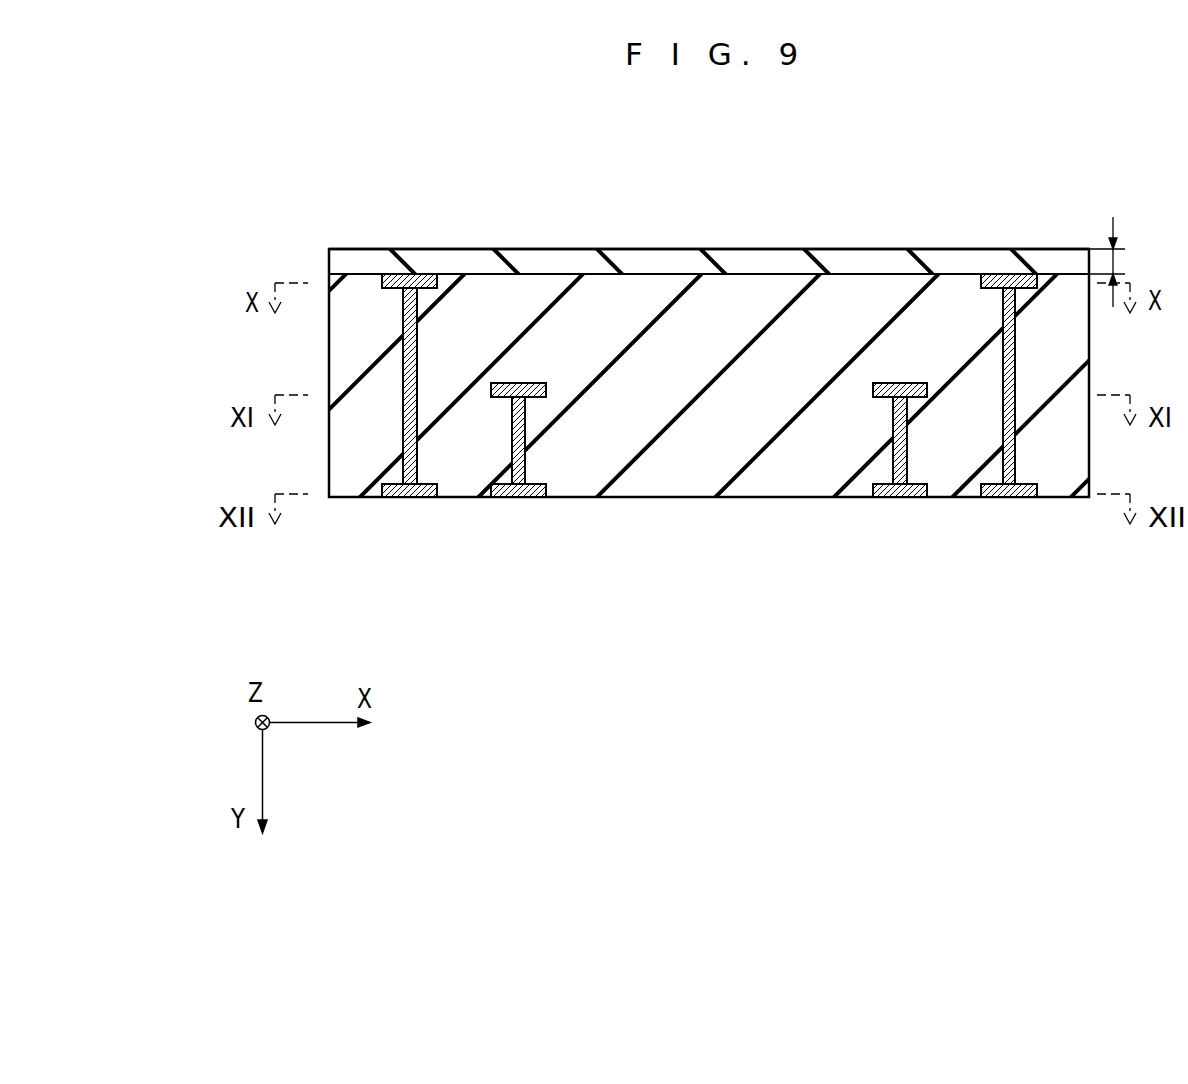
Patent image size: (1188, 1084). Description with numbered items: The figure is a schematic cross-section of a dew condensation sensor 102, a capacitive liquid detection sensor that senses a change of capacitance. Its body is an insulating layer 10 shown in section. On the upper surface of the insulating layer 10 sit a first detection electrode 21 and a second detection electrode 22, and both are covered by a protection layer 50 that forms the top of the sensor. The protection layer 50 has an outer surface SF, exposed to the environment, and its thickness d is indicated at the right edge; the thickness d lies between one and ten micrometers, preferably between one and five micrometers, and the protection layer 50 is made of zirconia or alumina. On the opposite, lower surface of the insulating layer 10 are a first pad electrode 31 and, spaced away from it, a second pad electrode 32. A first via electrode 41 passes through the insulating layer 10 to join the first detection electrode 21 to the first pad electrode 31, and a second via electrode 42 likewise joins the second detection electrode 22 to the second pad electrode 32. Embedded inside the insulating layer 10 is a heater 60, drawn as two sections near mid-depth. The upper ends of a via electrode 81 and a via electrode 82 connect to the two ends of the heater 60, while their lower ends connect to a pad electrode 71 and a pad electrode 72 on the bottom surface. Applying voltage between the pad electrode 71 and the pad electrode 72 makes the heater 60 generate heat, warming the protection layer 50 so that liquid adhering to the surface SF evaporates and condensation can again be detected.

The dew condensation sensor 102 is at (328, 112).
The surface SF is at (397, 235).
The protection layer 50 is at (342, 265).
The insulating layer 10 is at (342, 363).
The first detection electrode 21 is at (428, 275).
The second detection electrode 22 is at (995, 275).
The first pad electrode 31 is at (400, 497).
The second pad electrode 32 is at (1020, 497).
The first via electrode 41 is at (408, 438).
The second via electrode 42 is at (1014, 440).
The heater 60 is at (527, 384).
The pad electrode 71 is at (532, 497).
The pad electrode 72 is at (888, 497).
The via electrode 81 is at (521, 428).
The via electrode 82 is at (892, 425).
The thickness d is at (1114, 235).